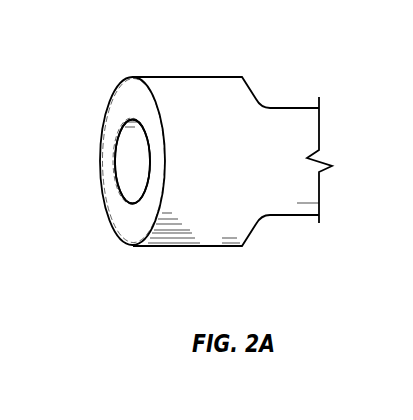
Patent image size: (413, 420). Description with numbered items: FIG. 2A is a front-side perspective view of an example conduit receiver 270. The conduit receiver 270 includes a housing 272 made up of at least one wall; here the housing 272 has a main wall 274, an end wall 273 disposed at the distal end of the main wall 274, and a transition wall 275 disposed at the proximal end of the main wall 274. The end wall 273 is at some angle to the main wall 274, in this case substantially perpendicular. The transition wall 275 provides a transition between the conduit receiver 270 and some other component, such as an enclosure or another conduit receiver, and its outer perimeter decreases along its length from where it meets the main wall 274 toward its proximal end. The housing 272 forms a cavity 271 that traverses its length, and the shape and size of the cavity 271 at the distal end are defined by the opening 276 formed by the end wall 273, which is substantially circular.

The conduit receiver 270 is at (230, 75).
The cavity 271 is at (142, 167).
The housing 272 is at (154, 249).
The end wall 273 is at (128, 95).
The main wall 274 is at (190, 83).
The transition wall 275 is at (283, 107).
The opening 276 is at (125, 143).